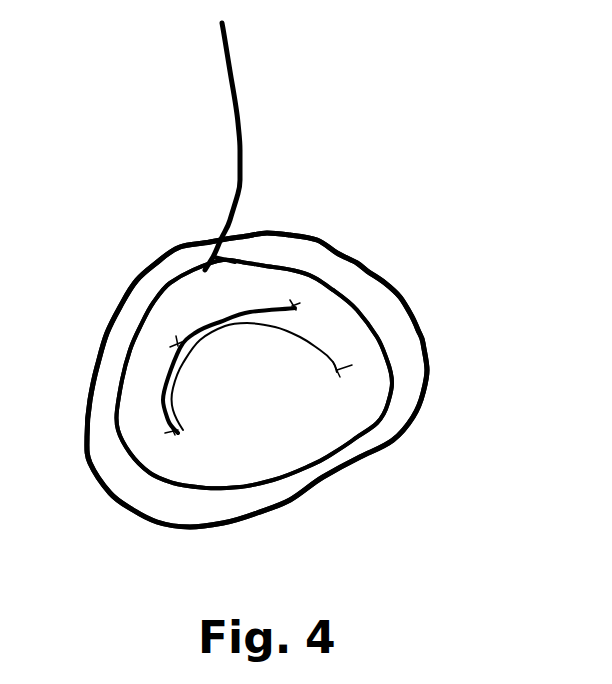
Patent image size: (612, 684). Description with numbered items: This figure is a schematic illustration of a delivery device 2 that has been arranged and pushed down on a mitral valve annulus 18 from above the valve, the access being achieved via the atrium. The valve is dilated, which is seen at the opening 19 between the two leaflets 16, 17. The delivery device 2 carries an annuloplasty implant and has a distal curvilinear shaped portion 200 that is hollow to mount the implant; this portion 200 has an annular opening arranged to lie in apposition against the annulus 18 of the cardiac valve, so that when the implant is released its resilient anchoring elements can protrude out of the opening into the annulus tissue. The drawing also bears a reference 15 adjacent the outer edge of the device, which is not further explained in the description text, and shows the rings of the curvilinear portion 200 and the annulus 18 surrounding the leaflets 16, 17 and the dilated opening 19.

The delivery device 2 is at (241, 108).
The outer edge 15 is at (88, 486).
The leaflet 16 is at (182, 318).
The leaflet 17 is at (237, 402).
The mitral valve annulus 18 is at (332, 266).
The opening 19 is at (250, 313).
The distal curvilinear shaped portion 200 is at (355, 295).